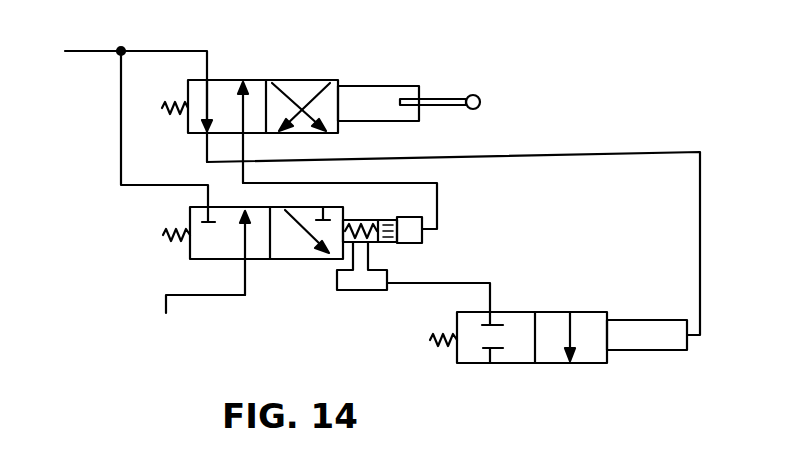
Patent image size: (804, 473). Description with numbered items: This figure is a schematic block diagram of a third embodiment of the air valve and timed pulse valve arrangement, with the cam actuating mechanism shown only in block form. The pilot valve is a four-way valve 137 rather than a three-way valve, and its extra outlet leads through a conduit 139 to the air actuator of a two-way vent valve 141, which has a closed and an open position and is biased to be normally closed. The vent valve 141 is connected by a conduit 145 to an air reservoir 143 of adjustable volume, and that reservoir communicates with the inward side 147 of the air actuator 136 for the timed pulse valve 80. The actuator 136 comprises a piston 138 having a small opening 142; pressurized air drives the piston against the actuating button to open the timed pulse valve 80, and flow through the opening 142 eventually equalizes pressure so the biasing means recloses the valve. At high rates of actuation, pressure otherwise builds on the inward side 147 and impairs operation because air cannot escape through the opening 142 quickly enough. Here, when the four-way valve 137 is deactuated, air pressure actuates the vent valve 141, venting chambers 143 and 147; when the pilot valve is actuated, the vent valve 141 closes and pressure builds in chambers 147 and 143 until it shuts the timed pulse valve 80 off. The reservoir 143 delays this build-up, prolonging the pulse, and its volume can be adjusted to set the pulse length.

The four-way valve 137 is at (277, 78).
The conduit 139 is at (508, 155).
The timed pulse valve 80 is at (268, 282).
The inward side 147 is at (357, 220).
The piston 138 is at (390, 222).
The small opening 142 is at (402, 244).
The timed actuator 136 is at (419, 227).
The air reservoir 143 is at (340, 291).
The conduit 145 is at (437, 285).
The two-way vent valve 141 is at (518, 365).